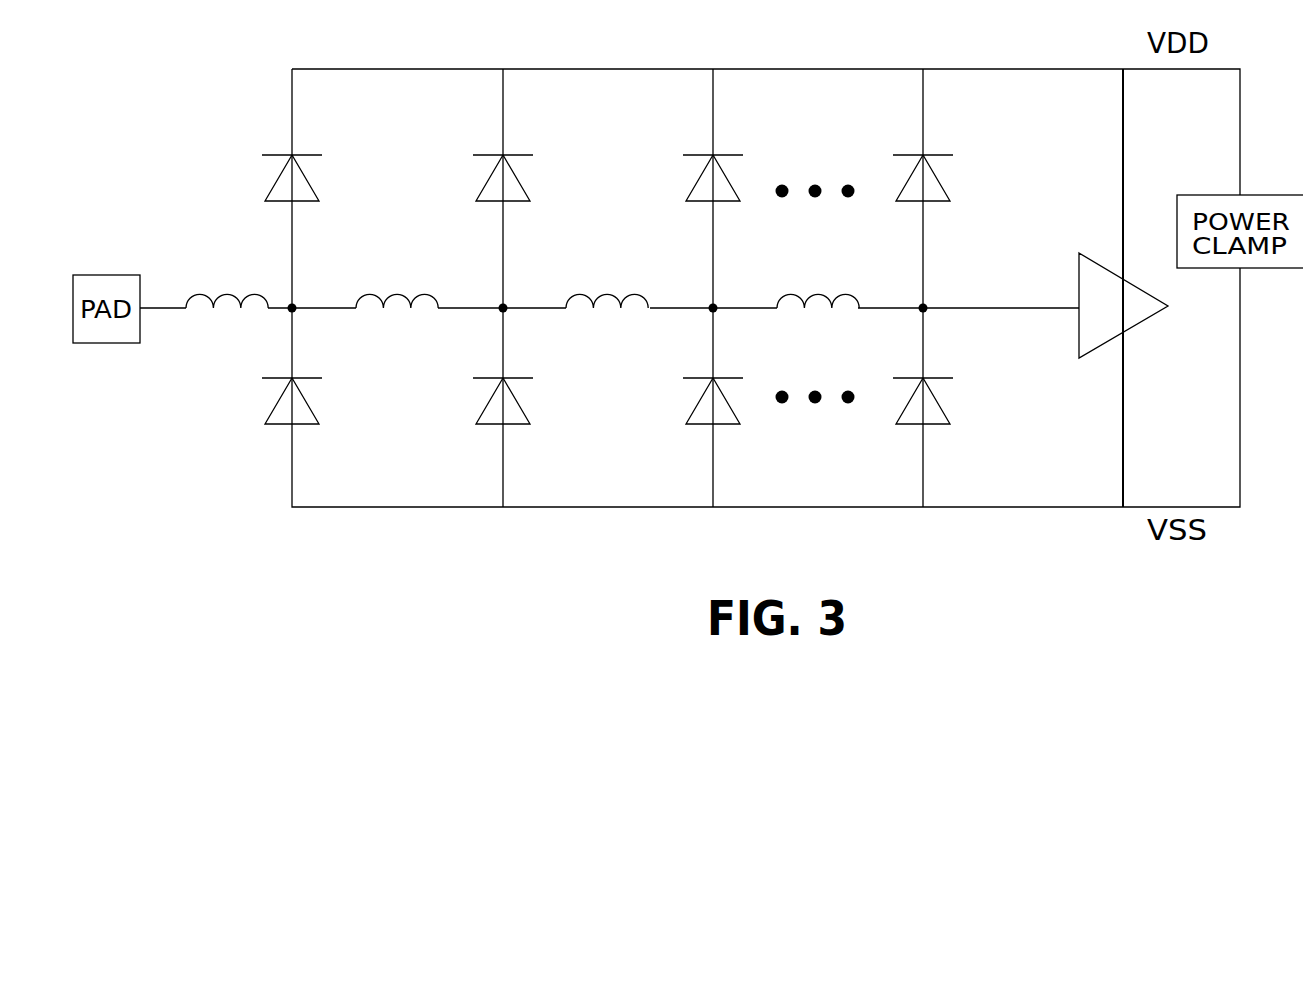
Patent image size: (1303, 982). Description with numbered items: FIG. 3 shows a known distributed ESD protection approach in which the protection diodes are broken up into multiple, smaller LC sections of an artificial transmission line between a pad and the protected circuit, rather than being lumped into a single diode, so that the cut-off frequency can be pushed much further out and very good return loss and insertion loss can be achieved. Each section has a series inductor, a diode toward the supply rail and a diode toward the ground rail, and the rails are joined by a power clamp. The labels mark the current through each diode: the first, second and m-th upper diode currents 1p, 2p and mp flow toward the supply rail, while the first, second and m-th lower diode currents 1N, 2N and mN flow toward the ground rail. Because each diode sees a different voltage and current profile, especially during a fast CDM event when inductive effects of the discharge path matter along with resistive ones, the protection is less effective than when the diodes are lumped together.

The first P-type ESD diode (current I1p) 1p is at (340, 134).
The second P-type ESD diode (current I1p) 2p is at (551, 134).
The m-th P-type ESD diode (current Imp) mp is at (969, 134).
The first N-type ESD diode (current I1N) 1N is at (340, 355).
The second N-type ESD diode (current I2N) 2N is at (551, 355).
The m-th N-type ESD diode (current ImN) mN is at (969, 355).